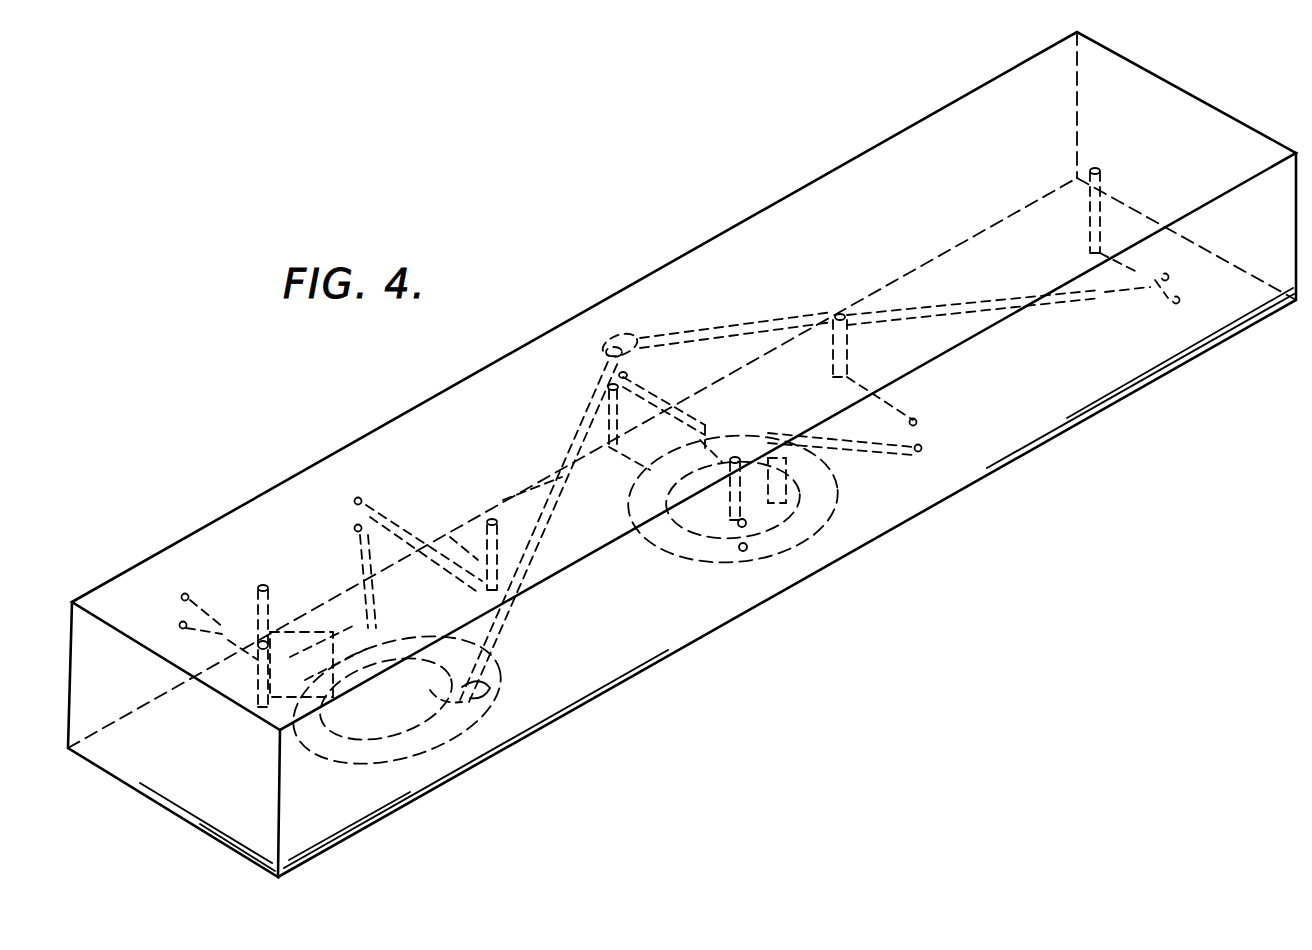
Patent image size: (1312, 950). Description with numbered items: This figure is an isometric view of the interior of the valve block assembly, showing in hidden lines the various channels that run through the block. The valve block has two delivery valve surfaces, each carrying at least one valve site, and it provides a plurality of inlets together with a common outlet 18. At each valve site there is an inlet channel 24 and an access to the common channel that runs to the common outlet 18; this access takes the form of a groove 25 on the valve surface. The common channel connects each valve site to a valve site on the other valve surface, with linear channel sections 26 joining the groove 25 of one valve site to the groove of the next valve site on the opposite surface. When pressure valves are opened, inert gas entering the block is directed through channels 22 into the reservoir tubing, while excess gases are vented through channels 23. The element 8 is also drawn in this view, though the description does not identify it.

The post 8 is at (1112, 198).
The common outlet 18 is at (253, 678).
The channels 22 is at (905, 400).
The channels 23 is at (190, 593).
The inlet channel 24 is at (667, 392).
The groove 25 is at (616, 345).
The linear channel sections 26 is at (567, 467).